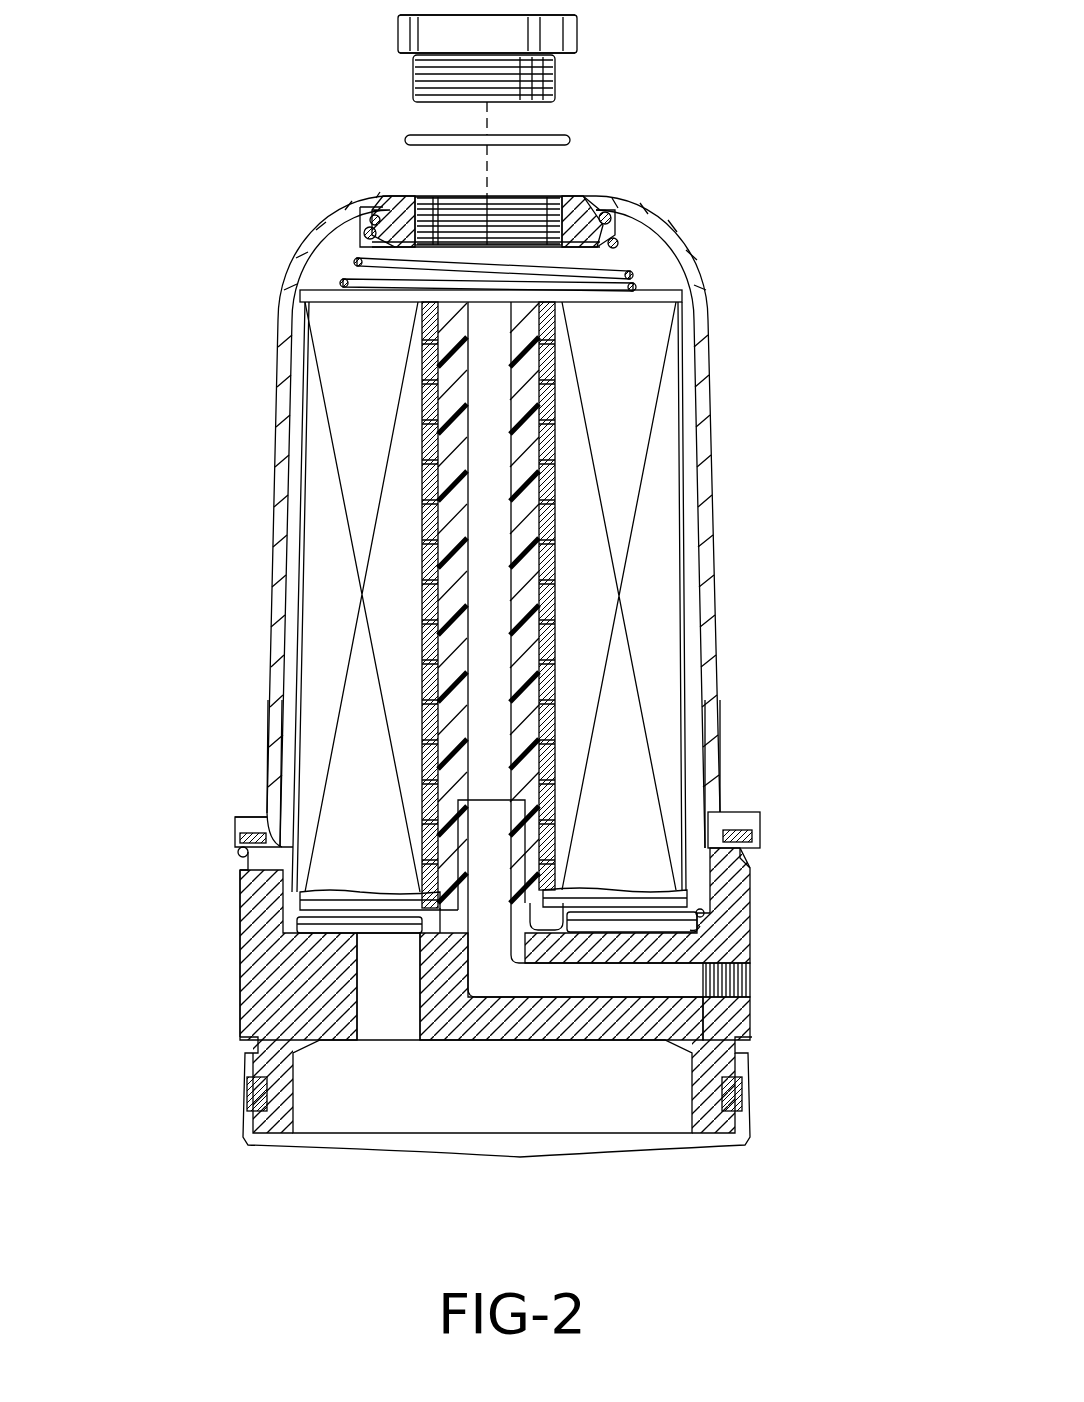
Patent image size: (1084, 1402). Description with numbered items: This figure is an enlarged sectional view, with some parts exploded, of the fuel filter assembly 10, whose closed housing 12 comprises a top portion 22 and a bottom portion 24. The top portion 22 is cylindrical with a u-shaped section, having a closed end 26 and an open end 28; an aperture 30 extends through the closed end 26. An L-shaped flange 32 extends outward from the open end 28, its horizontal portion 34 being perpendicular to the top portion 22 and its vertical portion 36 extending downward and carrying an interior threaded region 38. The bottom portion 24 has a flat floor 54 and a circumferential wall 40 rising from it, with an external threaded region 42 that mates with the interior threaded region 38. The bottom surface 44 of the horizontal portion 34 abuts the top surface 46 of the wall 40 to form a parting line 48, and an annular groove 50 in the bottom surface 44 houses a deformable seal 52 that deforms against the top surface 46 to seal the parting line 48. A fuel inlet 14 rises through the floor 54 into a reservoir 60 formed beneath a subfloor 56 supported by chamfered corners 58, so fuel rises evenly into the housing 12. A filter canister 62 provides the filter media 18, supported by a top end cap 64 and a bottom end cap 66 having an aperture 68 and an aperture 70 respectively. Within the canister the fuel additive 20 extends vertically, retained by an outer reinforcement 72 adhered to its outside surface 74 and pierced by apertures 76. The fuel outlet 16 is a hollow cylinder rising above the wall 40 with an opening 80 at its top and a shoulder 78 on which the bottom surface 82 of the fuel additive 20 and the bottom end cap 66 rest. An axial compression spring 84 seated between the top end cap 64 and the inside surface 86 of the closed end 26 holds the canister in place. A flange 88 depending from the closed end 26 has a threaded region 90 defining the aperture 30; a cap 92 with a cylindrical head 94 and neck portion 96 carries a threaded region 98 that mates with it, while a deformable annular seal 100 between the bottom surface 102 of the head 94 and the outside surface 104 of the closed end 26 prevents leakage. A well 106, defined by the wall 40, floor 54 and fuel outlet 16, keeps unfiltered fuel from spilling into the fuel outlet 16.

The fuel filter assembly 10 is at (754, 392).
The housing 12 is at (722, 738).
The fuel inlet 14 is at (405, 1035).
The fuel outlet 16 is at (506, 857).
The filter media 18 is at (674, 661).
The fuel additive 20 is at (556, 380).
The top portion 22 is at (714, 456).
The bottom portion 24 is at (754, 1022).
The closed end 26 is at (700, 262).
The open end 28 is at (267, 815).
The aperture 30 is at (541, 196).
The L-shaped flange 32 is at (224, 827).
The horizontal portion 34 is at (233, 817).
The vertical portion 36 is at (240, 838).
The interior threaded region 38 is at (243, 860).
The circumferential wall 40 is at (240, 977).
The threaded region 42 is at (247, 857).
The bottom surface 44 is at (283, 935).
The top surface 46 is at (262, 820).
The parting line 48 is at (292, 845).
The annular groove 50 is at (762, 815).
The deformable seal 52 is at (756, 841).
The floor 54 is at (618, 927).
The subfloor 56 is at (706, 913).
The chamfered corners 58 is at (702, 931).
The reservoir 60 is at (582, 923).
The filter canister 62 is at (324, 282).
The top end cap 64 is at (300, 295).
The bottom end cap 66 is at (690, 892).
The aperture 68 is at (420, 312).
The aperture 70 is at (589, 977).
The outer reinforcement 72 is at (558, 497).
The outside surface 74 is at (425, 378).
The apertures 76 is at (423, 440).
The shoulder 78 is at (437, 912).
The opening 80 is at (490, 798).
The bottom surface 82 is at (560, 900).
The axial compression spring 84 is at (640, 276).
The inside surface 86 is at (680, 217).
The flange 88 is at (650, 232).
The threaded region 90 is at (423, 210).
The cap 92 is at (584, 23).
The cylindrical head 94 is at (417, 14).
The neck portion 96 is at (558, 80).
The threaded region 98 is at (556, 97).
The deformable annular seal 100 is at (412, 135).
The bottom surface 102 is at (411, 57).
The outside surface 104 is at (392, 197).
The well 106 is at (360, 948).